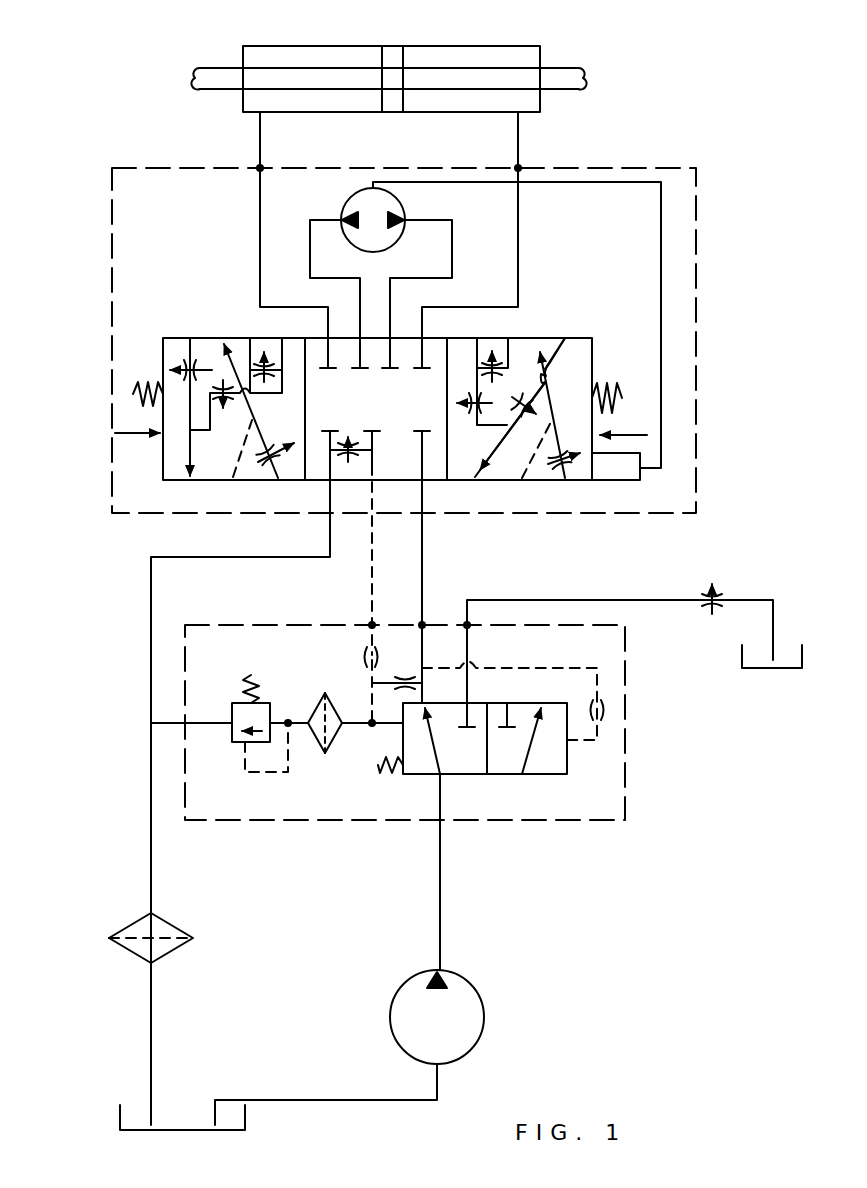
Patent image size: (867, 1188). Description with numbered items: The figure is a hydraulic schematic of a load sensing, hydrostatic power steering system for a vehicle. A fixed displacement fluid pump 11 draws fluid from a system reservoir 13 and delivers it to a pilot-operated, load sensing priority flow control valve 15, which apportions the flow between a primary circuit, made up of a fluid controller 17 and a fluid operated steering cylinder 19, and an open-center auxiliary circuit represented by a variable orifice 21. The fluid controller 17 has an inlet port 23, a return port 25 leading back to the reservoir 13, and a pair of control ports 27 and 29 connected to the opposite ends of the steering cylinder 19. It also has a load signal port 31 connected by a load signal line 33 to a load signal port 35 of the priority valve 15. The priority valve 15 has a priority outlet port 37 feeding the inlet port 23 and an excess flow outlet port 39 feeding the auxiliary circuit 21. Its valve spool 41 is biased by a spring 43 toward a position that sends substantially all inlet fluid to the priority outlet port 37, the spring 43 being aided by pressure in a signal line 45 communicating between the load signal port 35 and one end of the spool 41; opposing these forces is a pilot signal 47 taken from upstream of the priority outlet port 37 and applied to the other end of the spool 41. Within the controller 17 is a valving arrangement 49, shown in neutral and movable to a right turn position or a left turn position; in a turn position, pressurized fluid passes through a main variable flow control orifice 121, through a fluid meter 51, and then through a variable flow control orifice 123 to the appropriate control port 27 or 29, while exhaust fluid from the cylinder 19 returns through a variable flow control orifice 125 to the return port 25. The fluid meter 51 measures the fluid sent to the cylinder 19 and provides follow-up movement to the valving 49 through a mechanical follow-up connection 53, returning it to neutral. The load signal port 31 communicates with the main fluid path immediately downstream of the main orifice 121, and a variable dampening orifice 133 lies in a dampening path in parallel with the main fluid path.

The fluid pump 11 is at (397, 990).
The system reservoir 13 is at (757, 670).
The priority flow control valve 15 is at (522, 824).
The fluid controller 17 is at (704, 170).
The steering cylinder 19 is at (283, 46).
The variable orifice 21 is at (702, 590).
The inlet port 23 is at (422, 513).
The return port 25 is at (330, 513).
The control port 27 is at (260, 168).
The control port 29 is at (518, 168).
The load signal port 31 is at (372, 513).
The load signal line 33 is at (371, 585).
The load signal port 35 is at (372, 625).
The priority outlet port 37 is at (424, 624).
The excess flow outlet port 39 is at (468, 624).
The valve spool 41 is at (567, 757).
The spring 43 is at (388, 774).
The signal line 45 is at (378, 728).
The pilot signal 47 is at (510, 668).
The valving arrangement 49 is at (575, 334).
The fluid meter 51 is at (348, 200).
The mechanical follow-up connection 53 is at (661, 265).
The main variable flow control orifice 121 is at (257, 469).
The variable flow control orifice 123 is at (253, 338).
The variable flow control orifice 125 is at (182, 349).
The variable dampening orifice 133 is at (237, 410).